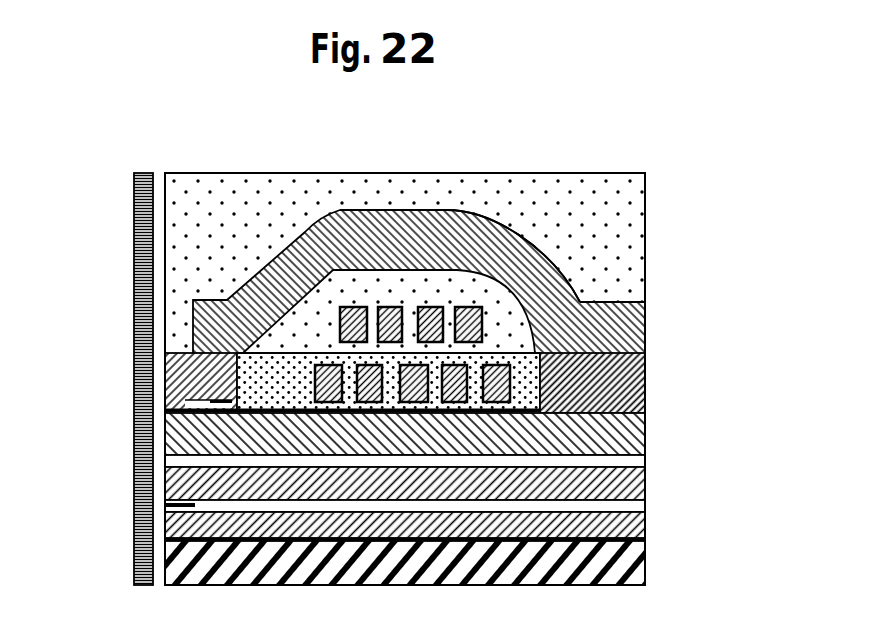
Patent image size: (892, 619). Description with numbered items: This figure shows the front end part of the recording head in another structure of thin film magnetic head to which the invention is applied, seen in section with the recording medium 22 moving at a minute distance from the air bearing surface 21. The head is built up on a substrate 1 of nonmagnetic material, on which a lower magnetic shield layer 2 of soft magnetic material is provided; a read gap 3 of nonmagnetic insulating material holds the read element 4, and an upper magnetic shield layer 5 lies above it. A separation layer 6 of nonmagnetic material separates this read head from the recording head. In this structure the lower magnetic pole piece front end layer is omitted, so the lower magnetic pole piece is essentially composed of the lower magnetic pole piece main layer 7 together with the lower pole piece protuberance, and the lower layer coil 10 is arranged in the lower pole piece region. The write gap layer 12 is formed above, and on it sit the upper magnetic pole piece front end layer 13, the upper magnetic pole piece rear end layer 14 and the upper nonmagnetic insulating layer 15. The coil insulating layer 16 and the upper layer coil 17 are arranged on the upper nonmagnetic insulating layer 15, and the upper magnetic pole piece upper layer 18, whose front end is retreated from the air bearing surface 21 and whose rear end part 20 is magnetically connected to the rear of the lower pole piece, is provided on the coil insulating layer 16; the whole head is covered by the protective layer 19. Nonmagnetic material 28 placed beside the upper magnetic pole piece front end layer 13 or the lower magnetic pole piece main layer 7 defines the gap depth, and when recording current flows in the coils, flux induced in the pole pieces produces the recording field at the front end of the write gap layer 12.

The substrate 1 is at (637, 566).
The lower magnetic shield layer 2 is at (640, 531).
The read gap 3 is at (637, 503).
The read element 4 is at (165, 504).
The upper magnetic shield layer 5 is at (645, 485).
The separation layer 6 is at (638, 462).
The lower magnetic pole piece main layer 7 is at (636, 437).
The lower layer coil 10 is at (443, 350).
The write gap layer 12 is at (165, 410).
The upper magnetic pole piece front end layer 13 is at (168, 372).
The upper magnetic pole piece rear end layer 14 is at (633, 372).
The upper nonmagnetic insulating layer 15 is at (265, 395).
The coil insulating layer 16 is at (297, 330).
The upper layer coil 17 is at (392, 307).
The upper magnetic pole piece upper layer 18 is at (537, 267).
The protective layer 19 is at (265, 203).
The rear end part 20 is at (620, 323).
The air bearing surface 21 is at (165, 278).
The recording medium 22 is at (134, 216).
The nonmagnetic material 28 is at (170, 395).